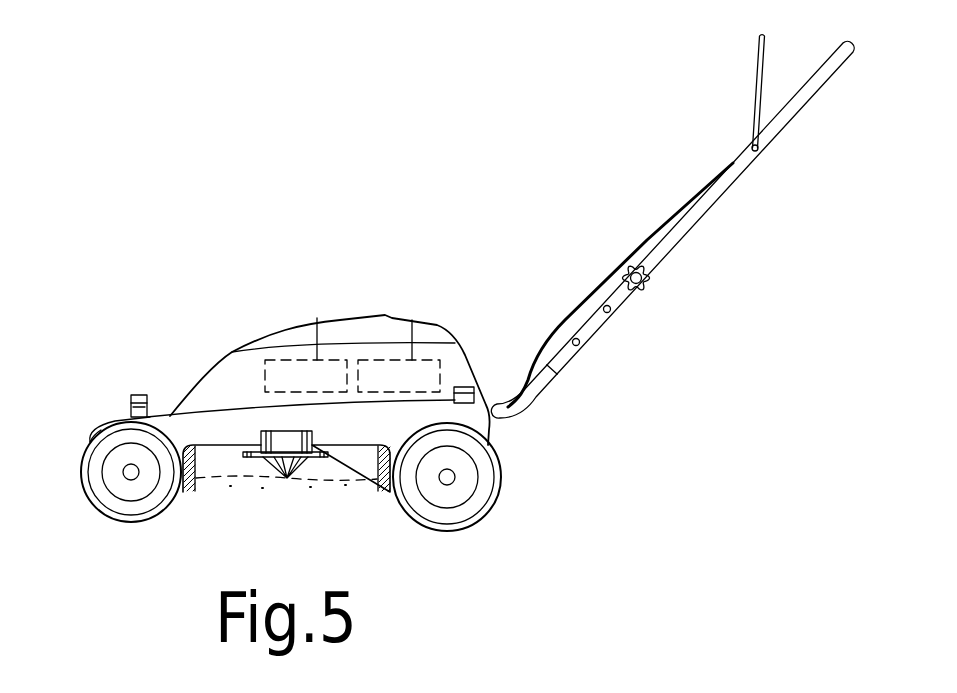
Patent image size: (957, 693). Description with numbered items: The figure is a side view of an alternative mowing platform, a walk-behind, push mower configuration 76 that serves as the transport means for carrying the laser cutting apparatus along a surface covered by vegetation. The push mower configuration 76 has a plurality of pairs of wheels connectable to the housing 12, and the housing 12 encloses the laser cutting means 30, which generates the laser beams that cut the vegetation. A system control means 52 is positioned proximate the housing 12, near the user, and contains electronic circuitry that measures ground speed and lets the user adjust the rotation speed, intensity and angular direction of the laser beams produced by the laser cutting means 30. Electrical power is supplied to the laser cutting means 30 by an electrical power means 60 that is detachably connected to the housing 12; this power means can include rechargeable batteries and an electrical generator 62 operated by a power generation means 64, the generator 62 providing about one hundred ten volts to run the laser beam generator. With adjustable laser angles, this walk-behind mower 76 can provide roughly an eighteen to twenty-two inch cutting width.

The housing 12 is at (354, 447).
The laser cutting means 30 is at (273, 421).
The system control means 52 is at (752, 91).
The electrical power means 60 is at (425, 310).
The electrical generator 62 is at (400, 315).
The power generation means 64 is at (307, 315).
The walk-behind, push mower configuration 76 is at (725, 286).